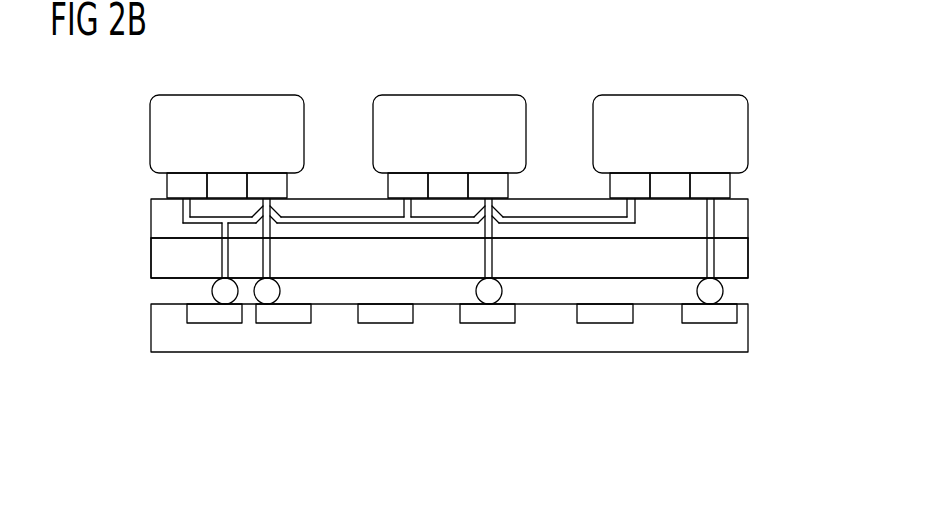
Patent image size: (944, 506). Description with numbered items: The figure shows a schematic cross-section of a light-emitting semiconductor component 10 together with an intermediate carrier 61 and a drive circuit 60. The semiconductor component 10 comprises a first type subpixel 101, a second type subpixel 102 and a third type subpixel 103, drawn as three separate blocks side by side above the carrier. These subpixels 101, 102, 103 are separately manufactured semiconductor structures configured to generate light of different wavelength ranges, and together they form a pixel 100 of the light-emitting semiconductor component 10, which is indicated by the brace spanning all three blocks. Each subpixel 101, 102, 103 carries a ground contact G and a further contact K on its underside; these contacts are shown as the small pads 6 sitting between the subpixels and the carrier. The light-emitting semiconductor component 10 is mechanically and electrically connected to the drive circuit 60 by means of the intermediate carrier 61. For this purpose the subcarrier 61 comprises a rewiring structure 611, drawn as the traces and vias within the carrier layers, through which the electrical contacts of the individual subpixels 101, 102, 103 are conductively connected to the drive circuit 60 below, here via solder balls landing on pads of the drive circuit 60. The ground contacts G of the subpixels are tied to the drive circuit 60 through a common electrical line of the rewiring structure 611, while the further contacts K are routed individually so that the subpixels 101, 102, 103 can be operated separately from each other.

The pixel 100 is at (747, 62).
The first type subpixel 101 is at (230, 116).
The second type subpixel 102 is at (453, 116).
The third type subpixel 103 is at (673, 116).
The terminal (gate G / cathode K contact) 6 is at (178, 185).
The light-emitting semiconductor component 10 is at (763, 235).
The intermediate carrier 61 is at (172, 255).
The rewiring structure 611 is at (222, 258).
The drive circuit 60 is at (212, 335).